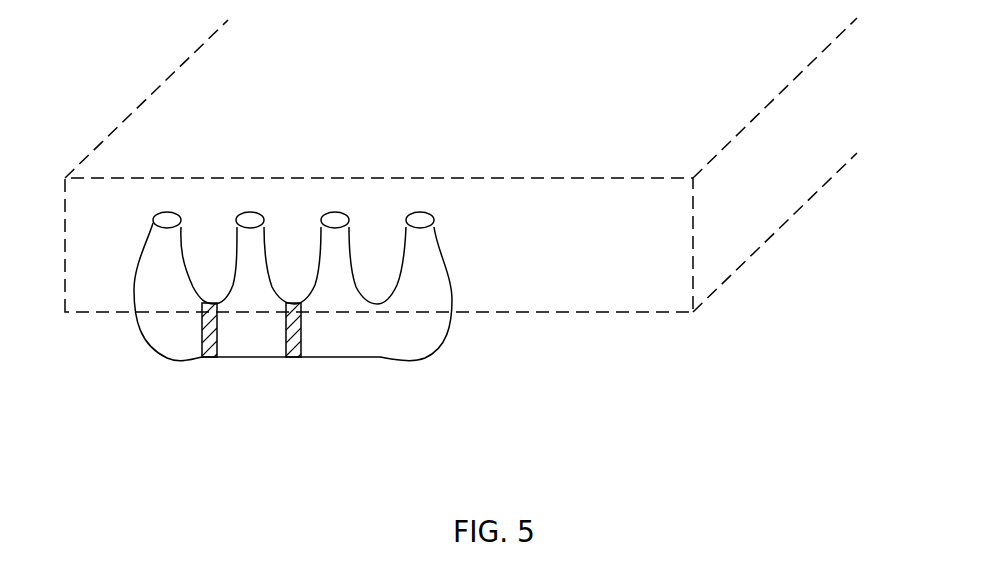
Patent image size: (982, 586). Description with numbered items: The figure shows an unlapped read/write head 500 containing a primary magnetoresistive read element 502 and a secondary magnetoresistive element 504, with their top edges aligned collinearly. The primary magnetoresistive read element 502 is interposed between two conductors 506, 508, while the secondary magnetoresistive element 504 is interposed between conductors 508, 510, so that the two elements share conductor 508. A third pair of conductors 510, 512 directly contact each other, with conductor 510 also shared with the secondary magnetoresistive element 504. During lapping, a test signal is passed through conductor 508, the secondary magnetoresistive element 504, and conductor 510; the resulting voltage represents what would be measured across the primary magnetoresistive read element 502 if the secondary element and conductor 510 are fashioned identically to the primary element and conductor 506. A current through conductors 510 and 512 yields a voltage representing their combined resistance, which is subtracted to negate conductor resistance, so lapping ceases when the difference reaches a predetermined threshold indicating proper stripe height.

The unlapped read/write head 500 is at (608, 386).
The primary magnetoresistive read element 502 is at (208, 360).
The secondary magnetoresistive element 504 is at (292, 360).
The conductor 506 is at (148, 285).
The conductor 508 is at (252, 280).
The conductor 510 is at (337, 280).
The conductor 512 is at (423, 283).